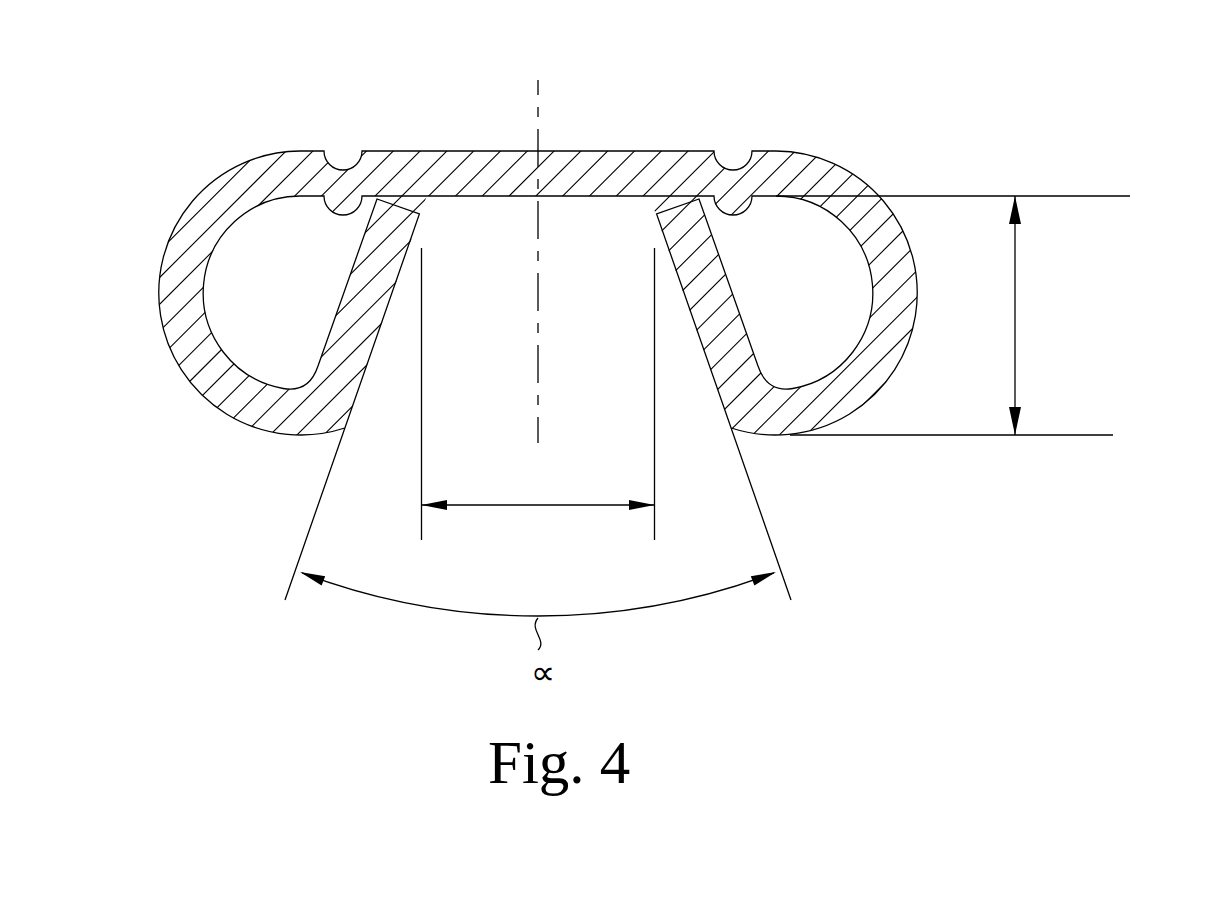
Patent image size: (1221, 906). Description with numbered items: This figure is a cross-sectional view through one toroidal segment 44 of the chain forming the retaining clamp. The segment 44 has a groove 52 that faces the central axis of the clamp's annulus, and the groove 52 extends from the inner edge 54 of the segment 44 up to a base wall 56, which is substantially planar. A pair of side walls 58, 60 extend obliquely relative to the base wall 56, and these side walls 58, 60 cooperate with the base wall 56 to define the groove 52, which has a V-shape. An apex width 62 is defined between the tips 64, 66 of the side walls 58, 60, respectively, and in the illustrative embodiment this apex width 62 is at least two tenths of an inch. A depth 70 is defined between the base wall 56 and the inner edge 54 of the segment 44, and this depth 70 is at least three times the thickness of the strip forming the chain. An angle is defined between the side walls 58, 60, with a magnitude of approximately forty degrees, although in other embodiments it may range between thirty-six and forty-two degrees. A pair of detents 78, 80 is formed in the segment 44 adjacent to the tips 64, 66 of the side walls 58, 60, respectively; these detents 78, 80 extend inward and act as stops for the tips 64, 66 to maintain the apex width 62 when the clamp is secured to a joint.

The segment 44 is at (852, 121).
The groove 52 is at (495, 367).
The inner edge 54 is at (288, 436).
The base wall 56 is at (587, 199).
The side wall 58 is at (371, 360).
The side wall 60 is at (705, 360).
The apex width 62 is at (541, 508).
The tip 64 is at (411, 203).
The tip 66 is at (655, 213).
The depth 70 is at (1016, 322).
The detent 78 is at (733, 211).
The detent 80 is at (342, 211).